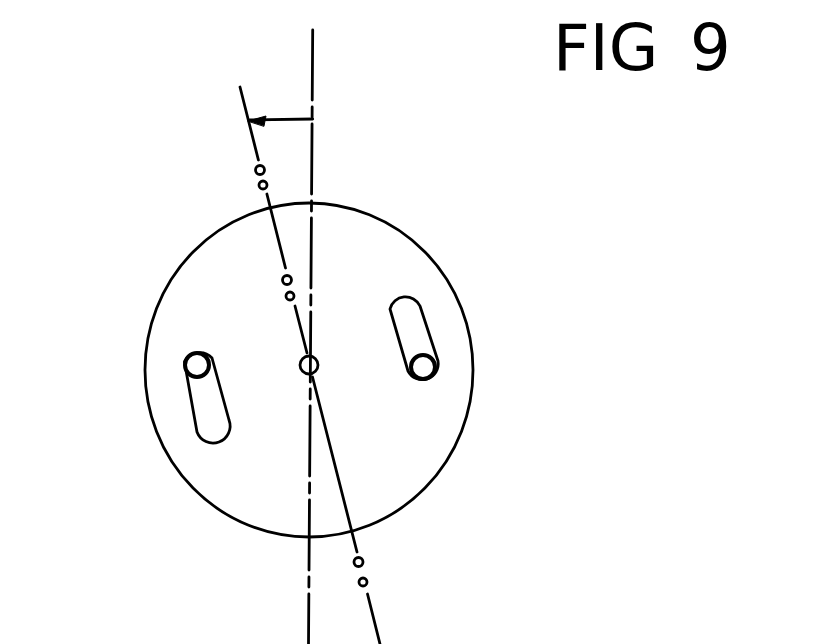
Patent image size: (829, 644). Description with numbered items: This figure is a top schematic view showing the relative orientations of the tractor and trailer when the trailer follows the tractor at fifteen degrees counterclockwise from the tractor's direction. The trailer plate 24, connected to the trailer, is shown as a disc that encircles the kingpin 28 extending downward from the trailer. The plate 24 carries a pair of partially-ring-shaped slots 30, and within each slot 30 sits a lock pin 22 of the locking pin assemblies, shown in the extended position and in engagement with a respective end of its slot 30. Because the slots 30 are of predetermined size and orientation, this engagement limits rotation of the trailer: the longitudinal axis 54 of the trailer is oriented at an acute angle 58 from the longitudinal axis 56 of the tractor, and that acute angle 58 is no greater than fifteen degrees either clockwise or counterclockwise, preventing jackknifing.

The lock pin 22 is at (190, 362).
The plate 24 is at (381, 213).
The kingpin 28 is at (303, 371).
The partially-ring-shaped slot 30 is at (192, 421).
The longitudinal axis of the trailer 54 is at (237, 148).
The longitudinal axis of the tractor 56 is at (315, 78).
The acute angle 58 is at (288, 117).